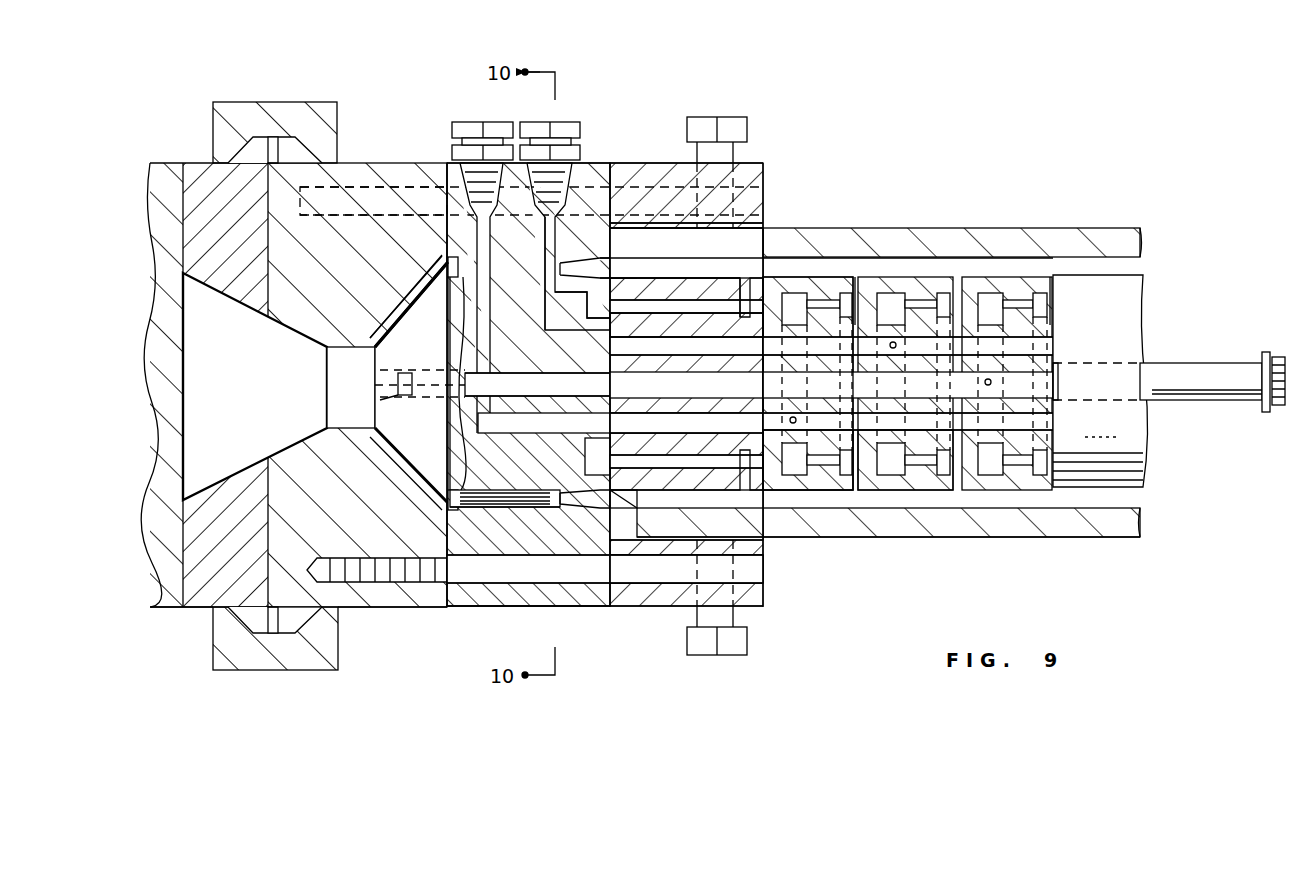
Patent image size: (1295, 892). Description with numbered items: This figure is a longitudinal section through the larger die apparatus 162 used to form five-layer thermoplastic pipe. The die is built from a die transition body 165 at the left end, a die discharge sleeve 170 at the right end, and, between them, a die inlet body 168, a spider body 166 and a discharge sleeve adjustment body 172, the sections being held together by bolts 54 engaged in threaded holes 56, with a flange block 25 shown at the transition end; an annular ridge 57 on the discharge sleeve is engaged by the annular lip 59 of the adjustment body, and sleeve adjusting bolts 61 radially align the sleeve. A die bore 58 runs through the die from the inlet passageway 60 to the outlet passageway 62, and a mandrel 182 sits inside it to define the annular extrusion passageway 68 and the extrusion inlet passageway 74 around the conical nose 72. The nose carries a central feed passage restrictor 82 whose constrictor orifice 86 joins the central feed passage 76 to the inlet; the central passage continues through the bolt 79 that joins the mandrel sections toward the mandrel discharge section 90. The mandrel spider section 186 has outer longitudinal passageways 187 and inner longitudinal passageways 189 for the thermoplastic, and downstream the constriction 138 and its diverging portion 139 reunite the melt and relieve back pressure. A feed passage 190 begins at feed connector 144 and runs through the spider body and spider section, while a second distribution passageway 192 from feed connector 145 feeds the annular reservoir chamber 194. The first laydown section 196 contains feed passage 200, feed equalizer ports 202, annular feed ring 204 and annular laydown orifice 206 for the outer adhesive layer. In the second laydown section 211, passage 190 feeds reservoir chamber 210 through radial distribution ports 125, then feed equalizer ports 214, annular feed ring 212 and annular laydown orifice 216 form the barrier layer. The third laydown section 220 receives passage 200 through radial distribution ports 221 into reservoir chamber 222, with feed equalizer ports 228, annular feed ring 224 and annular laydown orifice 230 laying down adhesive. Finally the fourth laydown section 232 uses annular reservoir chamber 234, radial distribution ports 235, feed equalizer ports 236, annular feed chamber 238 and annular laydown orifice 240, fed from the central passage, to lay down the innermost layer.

The flange block 25 is at (301, 670).
The bolts 54 is at (423, 582).
The threaded holes 56 is at (357, 192).
The annular ridge 57 is at (625, 227).
The die bore 58 is at (250, 440).
The annular lip 59 is at (645, 227).
The inlet passageway 60 is at (207, 345).
The sleeve adjusting bolts 61 is at (745, 120).
The outlet passageway 62 is at (1140, 262).
The annular extrusion passageway 68 is at (843, 276).
The conical nose 72 is at (410, 330).
The extrusion inlet passageway 74 is at (398, 336).
The central feed passage 76 is at (430, 371).
The bolt 79 is at (1219, 371).
The central feed passage restrictor 82 is at (373, 378).
The constrictor orifice 86 is at (397, 396).
The mandrel discharge section 90 is at (1144, 497).
The radial distribution ports 125 is at (795, 478).
The constriction 138 is at (592, 554).
The diverging portion 139 is at (621, 502).
The feed connector 144 is at (473, 122).
The feed connector 145 is at (569, 122).
The die apparatus 162 is at (408, 162).
The die transition body 165 is at (205, 607).
The spider body 166 is at (465, 606).
The die inlet body 168 is at (370, 607).
The die discharge sleeve 170 is at (1117, 538).
The discharge sleeve adjustment body 172 is at (660, 606).
The mandrel 182 is at (775, 272).
The mandrel spider section 186 is at (515, 467).
The outer longitudinal passageways 187 is at (523, 554).
The inner longitudinal passageways 189 is at (545, 478).
The feed passage 190 is at (525, 318).
The second distribution passageway 192 is at (573, 215).
The annular reservoir chamber 194 is at (600, 329).
The first laydown section 196 is at (715, 396).
The feed passage 200 is at (660, 347).
The feed equalizer ports 202 is at (650, 300).
The annular feed ring 204 is at (730, 300).
The annular laydown orifice 206 is at (770, 300).
The annular reservoir chamber 210 is at (795, 293).
The second laydown section 211 is at (835, 428).
The annular feed ring 212 is at (848, 293).
The feed equalizer ports 214 is at (822, 300).
The annular laydown orifice 216 is at (855, 300).
The third laydown section 220 is at (942, 476).
The radial distribution ports 221 is at (898, 345).
The annular reservoir chamber 222 is at (885, 476).
The annular feed ring 224 is at (950, 470).
The feed equalizer ports 228 is at (920, 465).
The annular laydown orifice 230 is at (973, 476).
The fourth laydown section 232 is at (1034, 422).
The annular reservoir chamber 234 is at (990, 294).
The radial distribution ports 235 is at (987, 375).
The feed equalizer ports 236 is at (1005, 300).
The annular feed chamber 238 is at (1046, 294).
The annular laydown orifice 240 is at (1052, 304).